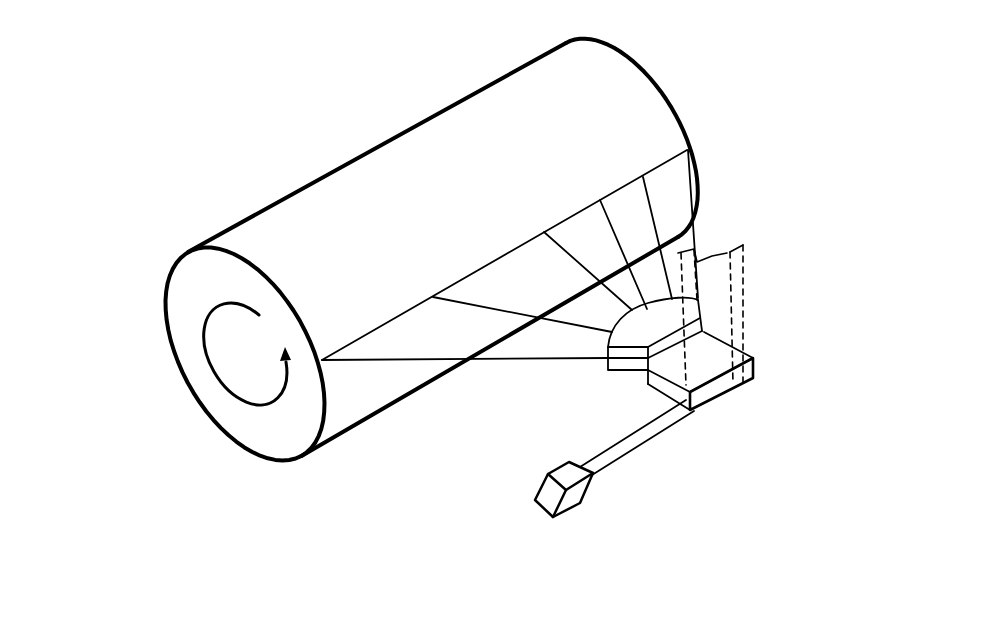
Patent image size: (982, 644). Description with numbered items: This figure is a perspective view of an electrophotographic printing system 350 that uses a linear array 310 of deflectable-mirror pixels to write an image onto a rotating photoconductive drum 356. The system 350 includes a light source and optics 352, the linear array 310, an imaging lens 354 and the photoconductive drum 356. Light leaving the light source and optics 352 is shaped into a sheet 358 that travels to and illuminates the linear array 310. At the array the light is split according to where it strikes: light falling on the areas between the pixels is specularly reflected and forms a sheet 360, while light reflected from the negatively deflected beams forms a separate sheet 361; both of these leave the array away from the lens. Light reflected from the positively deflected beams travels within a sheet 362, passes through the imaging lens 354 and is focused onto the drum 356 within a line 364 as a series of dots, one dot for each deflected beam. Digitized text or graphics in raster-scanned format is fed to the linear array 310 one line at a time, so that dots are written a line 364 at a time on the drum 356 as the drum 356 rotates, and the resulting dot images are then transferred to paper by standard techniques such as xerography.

The system 350 is at (94, 252).
The light source and optics 352 is at (573, 510).
The imaging lens 354 is at (606, 375).
The photoconductive drum 356 is at (350, 431).
The sheet 358 is at (655, 434).
The linear array 310 is at (728, 402).
The sheet 360 is at (704, 240).
The sheet 361 is at (736, 241).
The sheet 362 is at (500, 362).
The line 364 is at (511, 245).